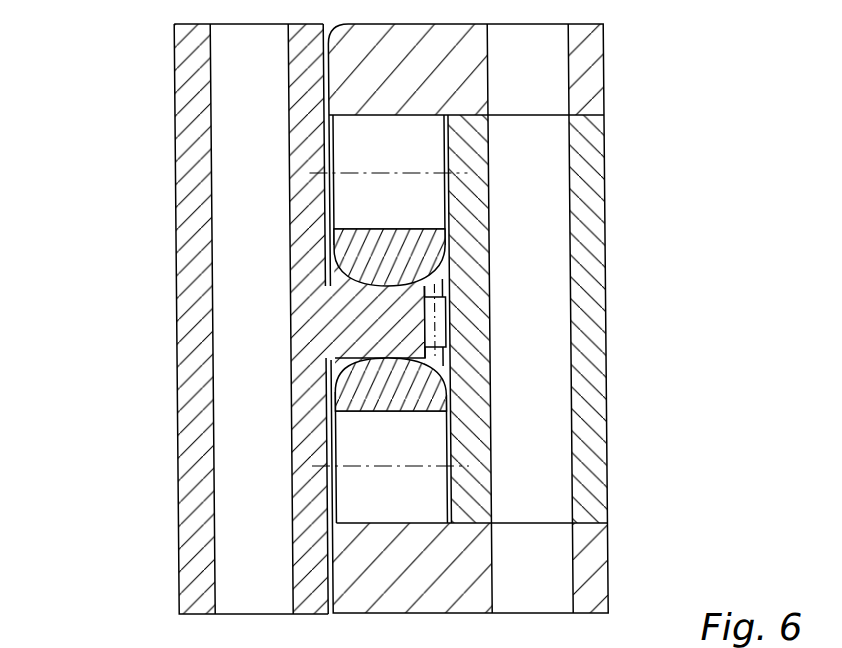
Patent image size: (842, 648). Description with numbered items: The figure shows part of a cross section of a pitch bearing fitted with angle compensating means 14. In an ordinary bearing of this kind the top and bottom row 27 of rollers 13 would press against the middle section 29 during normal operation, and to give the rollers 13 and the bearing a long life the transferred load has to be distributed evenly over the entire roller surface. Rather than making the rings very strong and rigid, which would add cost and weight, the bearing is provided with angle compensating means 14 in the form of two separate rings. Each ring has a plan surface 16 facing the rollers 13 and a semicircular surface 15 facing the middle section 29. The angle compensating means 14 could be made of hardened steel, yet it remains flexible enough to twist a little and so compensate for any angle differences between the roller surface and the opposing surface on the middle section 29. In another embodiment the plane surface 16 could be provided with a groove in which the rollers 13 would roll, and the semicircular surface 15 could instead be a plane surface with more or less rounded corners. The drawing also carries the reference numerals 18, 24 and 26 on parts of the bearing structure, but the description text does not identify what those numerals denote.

The rollers 13 is at (387, 153).
The angle compensating means 14 is at (400, 389).
The semicircular surface 15 is at (427, 367).
The plan surface 16 is at (395, 412).
The bore 18 is at (247, 347).
The shaft sleeve 24 is at (188, 139).
The housing 26 is at (583, 231).
The row 27 is at (392, 112).
The middle section 29 is at (378, 318).